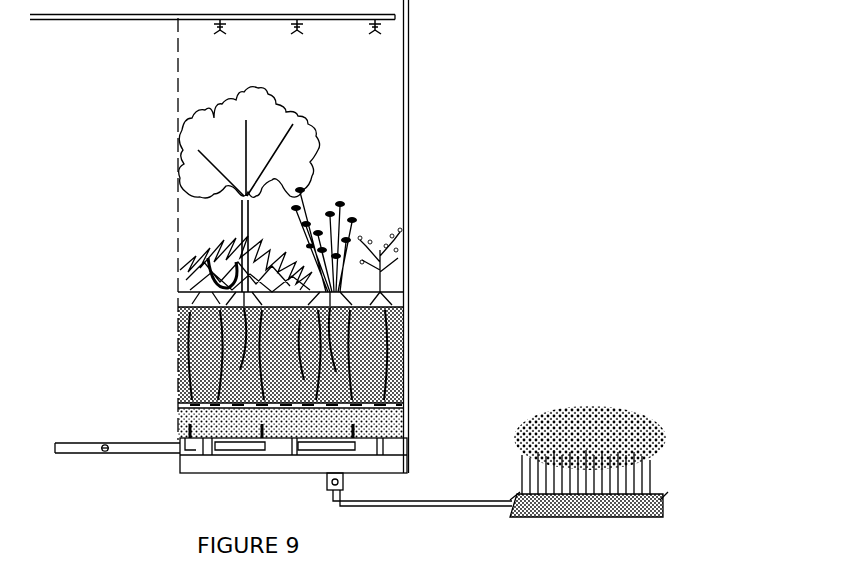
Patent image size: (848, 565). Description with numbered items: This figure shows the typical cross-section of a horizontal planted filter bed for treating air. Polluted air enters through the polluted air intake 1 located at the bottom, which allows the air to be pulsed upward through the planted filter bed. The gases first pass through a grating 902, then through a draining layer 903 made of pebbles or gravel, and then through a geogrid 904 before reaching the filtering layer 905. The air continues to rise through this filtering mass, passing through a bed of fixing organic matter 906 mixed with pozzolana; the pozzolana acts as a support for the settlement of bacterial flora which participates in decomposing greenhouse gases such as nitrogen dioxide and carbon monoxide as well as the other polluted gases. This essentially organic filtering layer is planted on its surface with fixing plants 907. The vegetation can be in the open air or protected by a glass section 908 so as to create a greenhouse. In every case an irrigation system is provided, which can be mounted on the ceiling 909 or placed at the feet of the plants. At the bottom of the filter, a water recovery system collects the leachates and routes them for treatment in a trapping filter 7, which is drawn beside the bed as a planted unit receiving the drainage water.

The polluted air intake 1 is at (133, 446).
The trapping filter 7 is at (497, 439).
The grating 902 is at (405, 450).
The draining layer 903 is at (405, 420).
The geogrid 904 is at (405, 406).
The filtering layer 905 is at (405, 381).
The bed of fixing organic matter 906 is at (405, 333).
The fixing plants 907 is at (344, 220).
The glass section 908 is at (406, 157).
The ceiling 909 is at (380, 31).